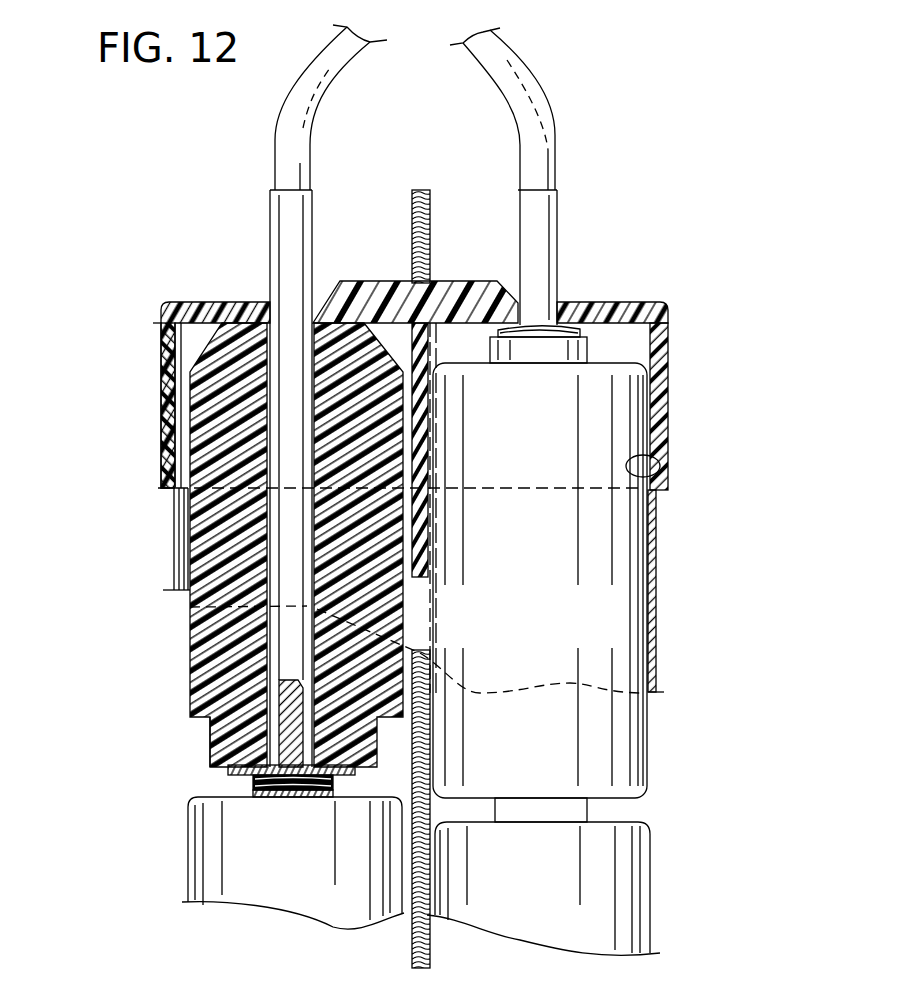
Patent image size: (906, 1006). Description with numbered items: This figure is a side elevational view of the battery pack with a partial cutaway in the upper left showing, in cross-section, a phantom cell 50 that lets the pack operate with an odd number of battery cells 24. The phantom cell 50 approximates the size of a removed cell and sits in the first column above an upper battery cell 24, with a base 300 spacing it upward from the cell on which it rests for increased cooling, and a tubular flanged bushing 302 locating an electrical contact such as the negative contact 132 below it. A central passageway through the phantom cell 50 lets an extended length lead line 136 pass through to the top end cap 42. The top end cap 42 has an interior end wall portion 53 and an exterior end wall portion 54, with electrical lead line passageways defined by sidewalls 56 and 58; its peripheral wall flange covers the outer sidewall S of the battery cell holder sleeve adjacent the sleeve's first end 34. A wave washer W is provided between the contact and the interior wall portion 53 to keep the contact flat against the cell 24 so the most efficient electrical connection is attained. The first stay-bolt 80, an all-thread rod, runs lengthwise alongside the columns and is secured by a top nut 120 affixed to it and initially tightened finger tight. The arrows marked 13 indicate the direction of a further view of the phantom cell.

The battery module 13 is at (193, 340).
The extended length lead line 136 is at (287, 145).
The sidewall of second electrical lead line passageway 58 is at (267, 303).
The top nut 120 is at (438, 285).
The first stay-bolt 80 is at (428, 215).
The sidewall of first electrical lead line passageway 56 is at (570, 303).
The exterior end wall portion 54 is at (593, 302).
The first end 34 is at (628, 310).
The interior end wall portion 53 is at (603, 325).
The top end cap 42 is at (670, 437).
The outer sidewall S is at (660, 468).
The phantom cell 50 is at (190, 645).
The base 300 is at (208, 738).
The tubular flanged bushing 302 is at (213, 767).
The wave washer W is at (253, 788).
The negative contact 132 is at (330, 794).
The battery cell 24 is at (698, 740).